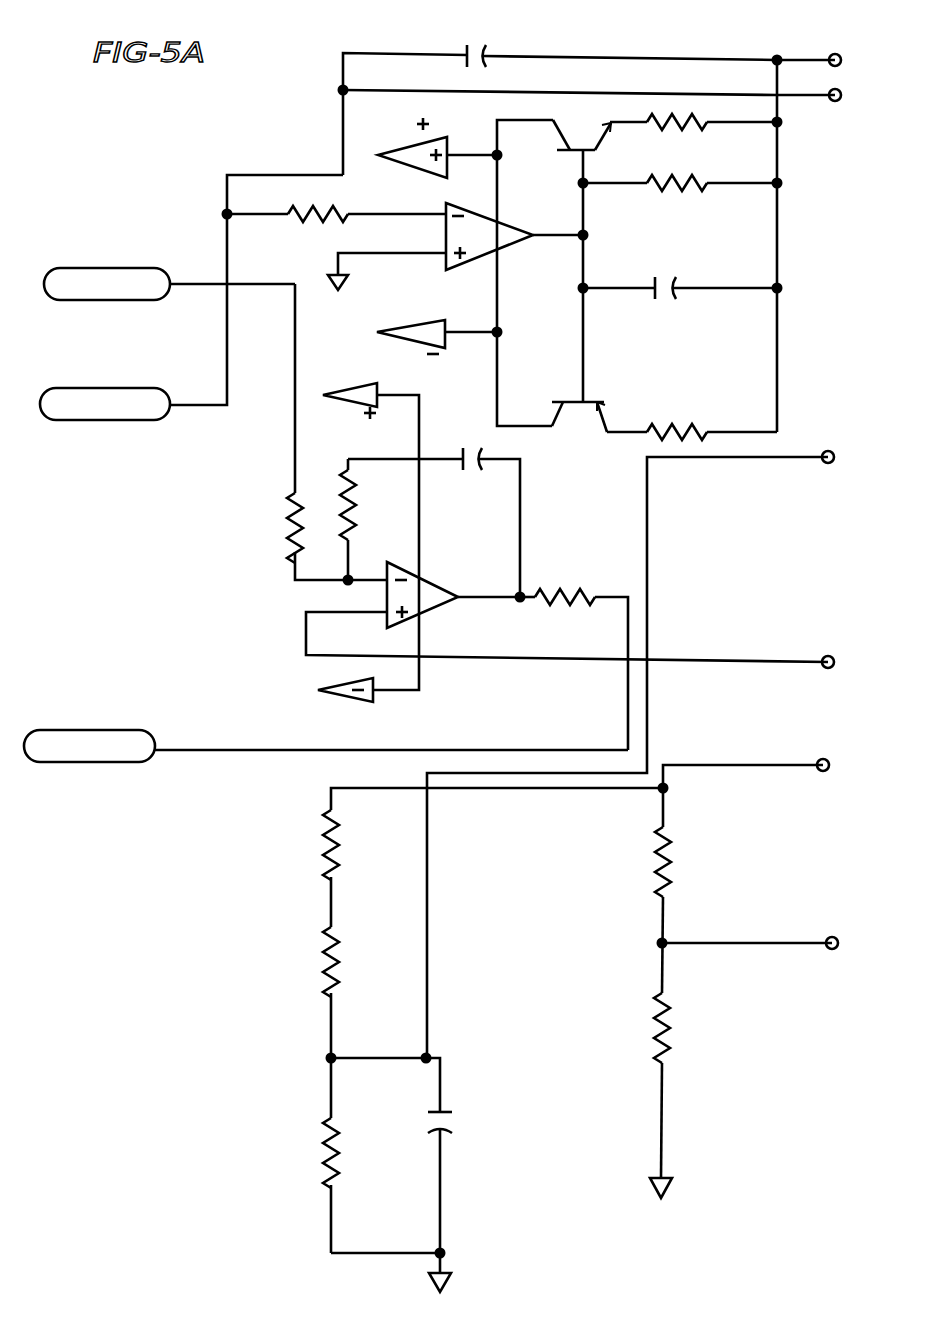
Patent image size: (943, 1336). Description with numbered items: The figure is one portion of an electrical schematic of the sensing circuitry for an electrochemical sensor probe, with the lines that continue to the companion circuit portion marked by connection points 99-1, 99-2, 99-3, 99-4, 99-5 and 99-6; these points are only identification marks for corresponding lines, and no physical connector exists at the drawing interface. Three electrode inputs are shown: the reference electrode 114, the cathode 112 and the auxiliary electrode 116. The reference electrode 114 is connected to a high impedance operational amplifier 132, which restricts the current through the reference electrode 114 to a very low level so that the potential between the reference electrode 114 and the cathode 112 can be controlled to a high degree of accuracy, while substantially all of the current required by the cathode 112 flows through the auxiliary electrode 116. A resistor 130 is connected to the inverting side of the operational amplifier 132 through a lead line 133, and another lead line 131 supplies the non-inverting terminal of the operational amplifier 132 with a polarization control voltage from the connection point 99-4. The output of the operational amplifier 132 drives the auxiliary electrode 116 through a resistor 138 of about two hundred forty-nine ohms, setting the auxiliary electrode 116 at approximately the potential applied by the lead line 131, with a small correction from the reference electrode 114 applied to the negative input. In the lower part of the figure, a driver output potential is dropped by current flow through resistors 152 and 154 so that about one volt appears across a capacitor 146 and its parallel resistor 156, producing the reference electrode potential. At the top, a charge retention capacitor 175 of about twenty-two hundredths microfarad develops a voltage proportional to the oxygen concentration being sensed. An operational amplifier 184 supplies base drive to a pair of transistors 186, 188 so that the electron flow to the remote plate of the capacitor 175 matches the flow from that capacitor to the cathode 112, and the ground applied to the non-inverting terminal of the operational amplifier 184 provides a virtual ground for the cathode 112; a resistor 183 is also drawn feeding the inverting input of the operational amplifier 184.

The charge retention capacitor 175 is at (488, 52).
The connection point 99-1 is at (828, 55).
The connection point 99-2 is at (822, 108).
The connection point 99-3 is at (828, 450).
The connection point 99-4 is at (824, 658).
The connection point 99-5 is at (818, 762).
The connection point 99-6 is at (827, 940).
The transistor 186 is at (597, 154).
The operational amplifier 184 is at (512, 222).
The resistor 183 is at (331, 208).
The transistor 188 is at (597, 401).
The reference electrode 114 is at (103, 267).
The cathode 112 is at (95, 421).
The auxiliary electrode 116 is at (90, 762).
The resistor 130 is at (290, 538).
The lead line 133 is at (300, 580).
The operational amplifier 132 is at (438, 578).
The lead line 131 is at (540, 662).
The resistor 138 is at (560, 590).
The resistor 152 is at (325, 845).
The resistor 154 is at (325, 980).
The resistor 156 is at (325, 1147).
The capacitor 146 is at (455, 1118).